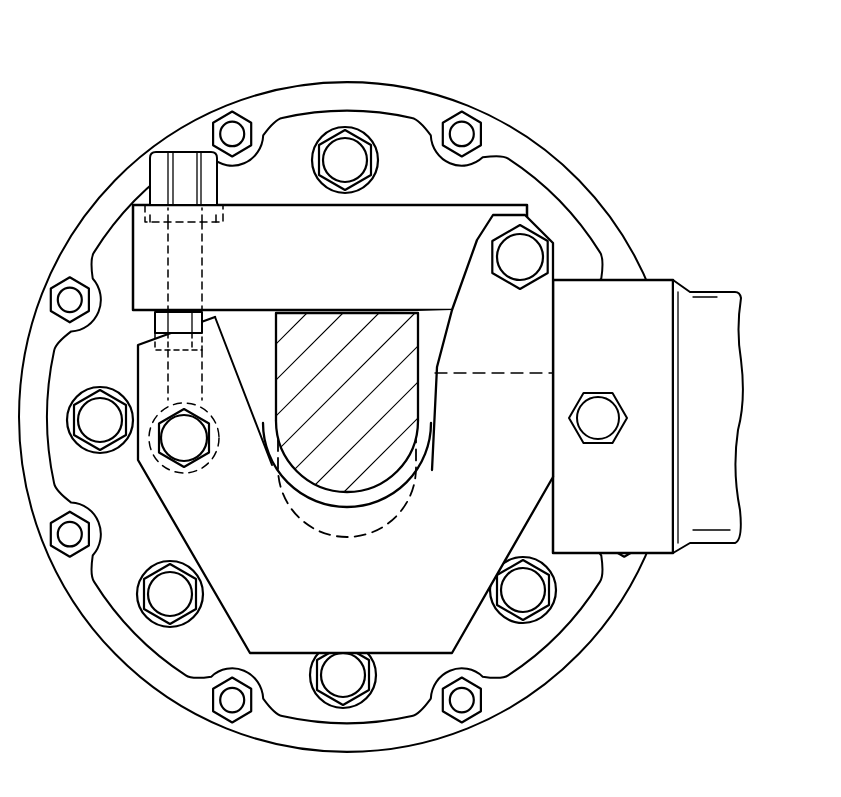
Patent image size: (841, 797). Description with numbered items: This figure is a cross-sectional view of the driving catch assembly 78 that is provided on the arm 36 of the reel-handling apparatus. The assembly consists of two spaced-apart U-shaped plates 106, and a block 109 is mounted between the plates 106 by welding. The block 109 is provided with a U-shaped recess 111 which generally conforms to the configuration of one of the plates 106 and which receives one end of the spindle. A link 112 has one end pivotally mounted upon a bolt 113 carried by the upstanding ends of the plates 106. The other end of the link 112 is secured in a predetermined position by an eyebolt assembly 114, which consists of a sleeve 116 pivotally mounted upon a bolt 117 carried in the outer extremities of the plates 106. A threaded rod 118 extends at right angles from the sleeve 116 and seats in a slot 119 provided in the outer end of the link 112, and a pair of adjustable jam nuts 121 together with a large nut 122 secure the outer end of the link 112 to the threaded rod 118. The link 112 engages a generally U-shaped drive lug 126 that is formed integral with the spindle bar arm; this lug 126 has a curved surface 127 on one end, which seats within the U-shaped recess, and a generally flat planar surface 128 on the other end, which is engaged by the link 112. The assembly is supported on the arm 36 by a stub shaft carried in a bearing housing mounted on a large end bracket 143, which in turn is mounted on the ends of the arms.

The arm 36 is at (724, 379).
The driving catch assembly 78 is at (402, 404).
The plates 106 is at (509, 509).
The block 109 is at (497, 372).
The U-shaped recess 111 is at (310, 532).
The link 112 is at (392, 222).
The bolt 113 is at (518, 258).
The eyebolt assembly 114 is at (173, 296).
The sleeve 116 is at (193, 473).
The bolt 117 is at (180, 445).
The threaded rod 118 is at (178, 364).
The slot 119 is at (197, 270).
The adjustable jam nuts 121 is at (157, 338).
The large nut 122 is at (185, 170).
The U-shaped lug 126 is at (338, 460).
The curved surface 127 is at (382, 483).
The planar surface 128 is at (333, 318).
The end bracket 143 is at (626, 509).